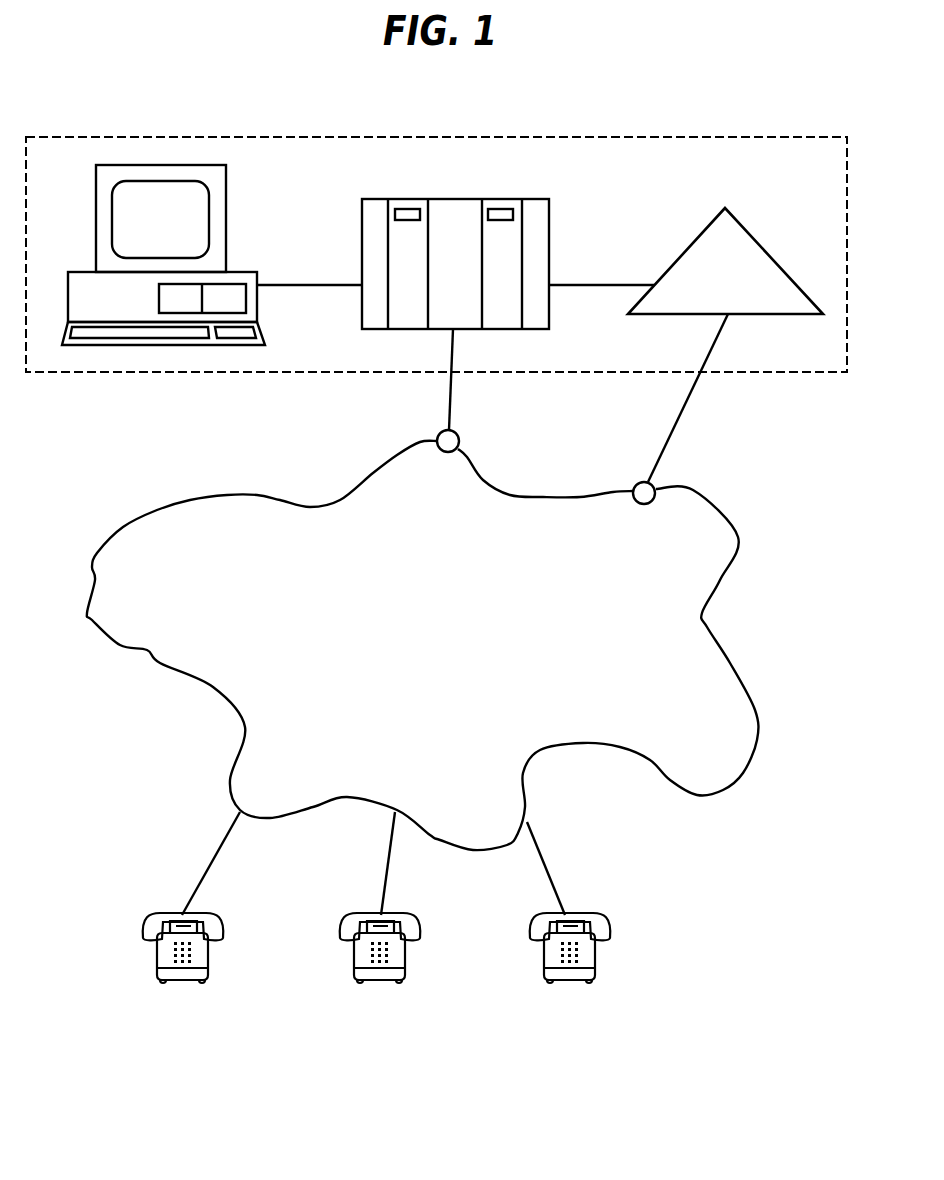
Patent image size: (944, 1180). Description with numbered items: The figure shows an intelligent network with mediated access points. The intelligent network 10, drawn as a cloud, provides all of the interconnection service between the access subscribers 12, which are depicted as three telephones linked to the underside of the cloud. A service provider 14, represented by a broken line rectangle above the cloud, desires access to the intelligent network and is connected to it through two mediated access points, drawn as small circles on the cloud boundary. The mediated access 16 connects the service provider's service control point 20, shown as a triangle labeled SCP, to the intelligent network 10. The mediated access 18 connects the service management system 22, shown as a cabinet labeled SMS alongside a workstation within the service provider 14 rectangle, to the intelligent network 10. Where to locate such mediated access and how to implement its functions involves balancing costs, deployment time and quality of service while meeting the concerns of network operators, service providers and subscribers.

The intelligent network 10 is at (207, 520).
The access subscribers 12 is at (222, 920).
The service provider 14 is at (305, 372).
The mediated access 16 is at (636, 484).
The mediated access 18 is at (439, 433).
The service control point 20 is at (677, 255).
The service management system 22 is at (533, 199).